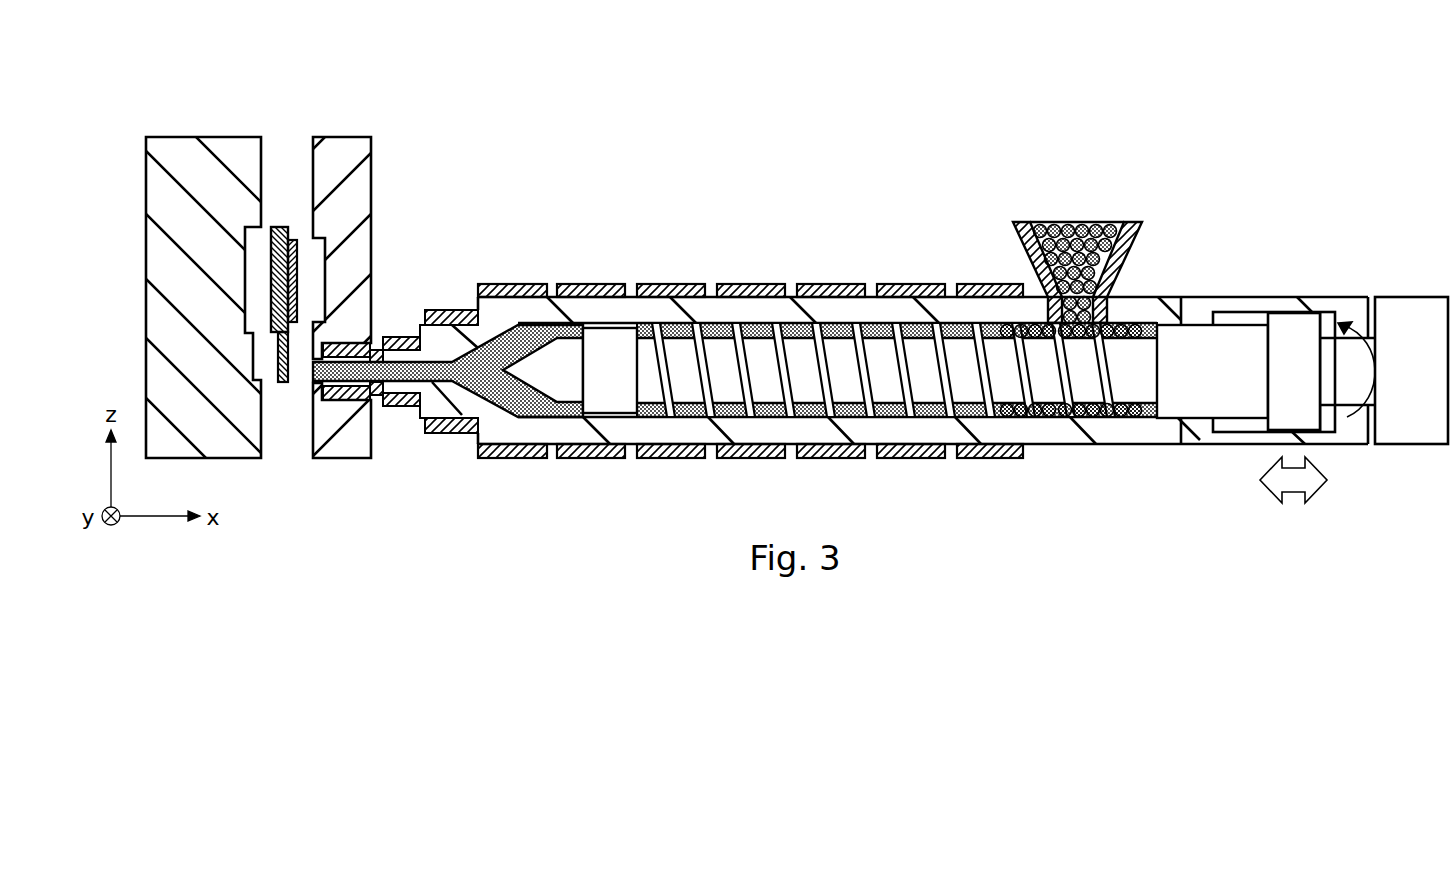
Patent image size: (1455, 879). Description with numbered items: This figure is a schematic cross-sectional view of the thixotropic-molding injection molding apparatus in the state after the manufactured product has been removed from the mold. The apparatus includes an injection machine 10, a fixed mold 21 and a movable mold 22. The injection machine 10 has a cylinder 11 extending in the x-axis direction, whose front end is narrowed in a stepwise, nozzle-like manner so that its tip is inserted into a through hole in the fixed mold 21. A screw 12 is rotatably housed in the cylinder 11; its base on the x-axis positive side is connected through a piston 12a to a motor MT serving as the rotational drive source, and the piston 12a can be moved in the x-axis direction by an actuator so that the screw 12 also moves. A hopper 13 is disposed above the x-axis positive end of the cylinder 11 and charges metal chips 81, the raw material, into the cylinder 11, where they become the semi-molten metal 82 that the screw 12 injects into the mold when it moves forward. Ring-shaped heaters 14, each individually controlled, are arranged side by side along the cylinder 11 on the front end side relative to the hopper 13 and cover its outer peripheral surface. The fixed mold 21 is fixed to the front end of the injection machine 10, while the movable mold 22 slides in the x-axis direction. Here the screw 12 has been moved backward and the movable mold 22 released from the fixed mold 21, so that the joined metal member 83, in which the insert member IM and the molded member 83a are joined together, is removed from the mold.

The injection machine 10 is at (880, 347).
The cylinder 11 is at (873, 305).
The screw 12 is at (911, 332).
The piston 12a is at (1290, 330).
The hopper 13 is at (1015, 237).
The ring-shaped heaters 14 is at (590, 460).
The fixed mold 21 is at (343, 148).
The movable mold 22 is at (188, 150).
The metal chips 81 is at (1095, 222).
The semi-molten metal 82 is at (710, 327).
The joined metal member 83 is at (339, 318).
The molded member 83a is at (286, 383).
The insert member IM is at (293, 293).
The motor MT is at (1394, 386).